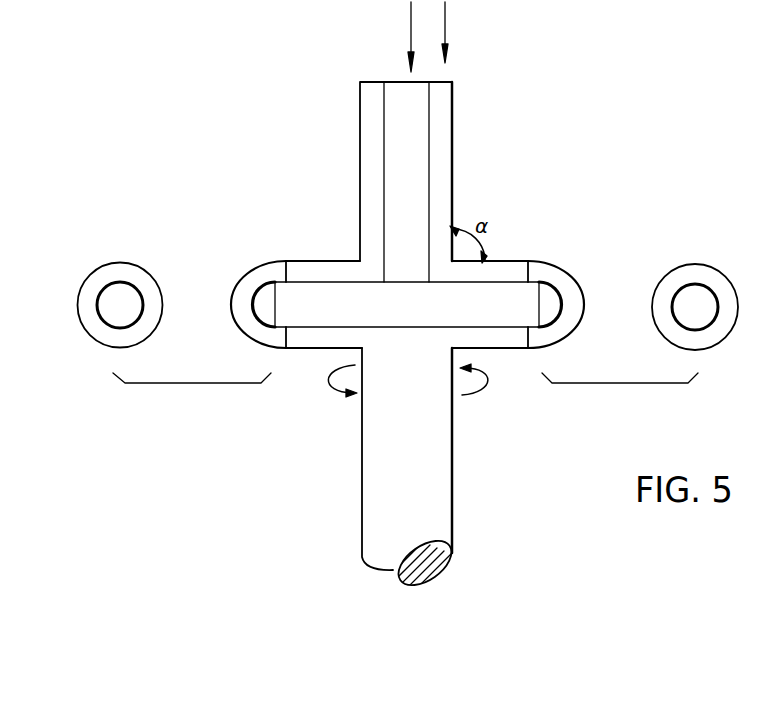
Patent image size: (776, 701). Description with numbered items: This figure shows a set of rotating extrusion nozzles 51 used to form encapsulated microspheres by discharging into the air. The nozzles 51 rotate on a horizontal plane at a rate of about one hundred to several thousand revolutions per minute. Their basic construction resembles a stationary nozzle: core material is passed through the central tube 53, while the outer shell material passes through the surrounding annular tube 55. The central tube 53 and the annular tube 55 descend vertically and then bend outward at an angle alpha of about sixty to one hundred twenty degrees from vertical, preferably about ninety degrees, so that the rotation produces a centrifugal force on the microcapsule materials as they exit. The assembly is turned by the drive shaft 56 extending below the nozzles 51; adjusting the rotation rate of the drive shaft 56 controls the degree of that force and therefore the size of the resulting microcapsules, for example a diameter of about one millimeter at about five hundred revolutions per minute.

The rotating extrusion nozzles 51 is at (292, 259).
The central tube 53 is at (428, 130).
The annular tube 55 is at (453, 168).
The drive shaft 56 is at (424, 470).